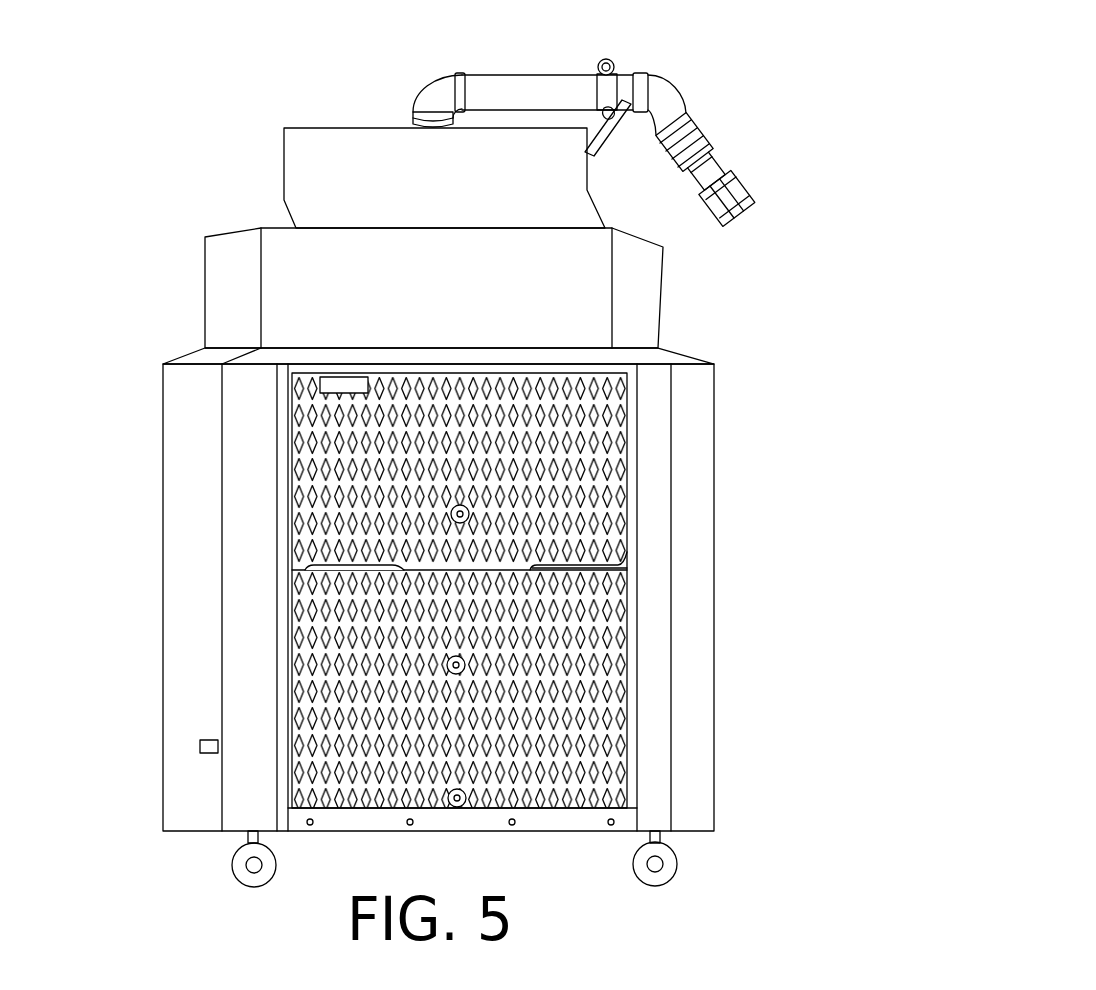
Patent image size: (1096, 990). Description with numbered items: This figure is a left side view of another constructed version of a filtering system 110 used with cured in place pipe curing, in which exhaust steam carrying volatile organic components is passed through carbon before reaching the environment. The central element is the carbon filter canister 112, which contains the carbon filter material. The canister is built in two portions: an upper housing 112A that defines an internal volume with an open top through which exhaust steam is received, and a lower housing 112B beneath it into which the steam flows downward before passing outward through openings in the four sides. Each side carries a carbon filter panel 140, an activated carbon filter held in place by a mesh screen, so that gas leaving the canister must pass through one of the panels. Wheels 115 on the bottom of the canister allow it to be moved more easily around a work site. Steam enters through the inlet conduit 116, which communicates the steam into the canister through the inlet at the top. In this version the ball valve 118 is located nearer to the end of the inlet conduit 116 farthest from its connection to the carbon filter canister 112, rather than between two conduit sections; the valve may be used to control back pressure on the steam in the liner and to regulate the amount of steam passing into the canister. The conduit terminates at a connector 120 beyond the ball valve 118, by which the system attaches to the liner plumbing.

The filtering system 110 is at (108, 266).
The carbon filter canister 112 is at (838, 424).
The upper housing 112A is at (658, 300).
The lower housing 112B is at (232, 523).
The wheels 115 is at (240, 873).
The inlet conduit 116 is at (680, 78).
The ball valve 118 is at (702, 137).
The connector 120 is at (734, 202).
The carbon filter panel 140 is at (155, 413).